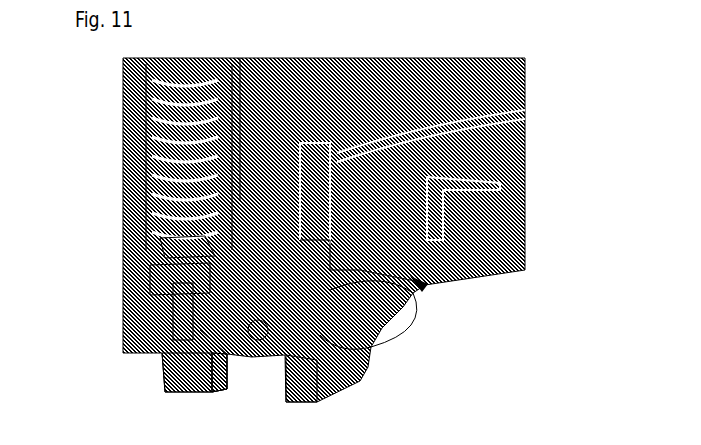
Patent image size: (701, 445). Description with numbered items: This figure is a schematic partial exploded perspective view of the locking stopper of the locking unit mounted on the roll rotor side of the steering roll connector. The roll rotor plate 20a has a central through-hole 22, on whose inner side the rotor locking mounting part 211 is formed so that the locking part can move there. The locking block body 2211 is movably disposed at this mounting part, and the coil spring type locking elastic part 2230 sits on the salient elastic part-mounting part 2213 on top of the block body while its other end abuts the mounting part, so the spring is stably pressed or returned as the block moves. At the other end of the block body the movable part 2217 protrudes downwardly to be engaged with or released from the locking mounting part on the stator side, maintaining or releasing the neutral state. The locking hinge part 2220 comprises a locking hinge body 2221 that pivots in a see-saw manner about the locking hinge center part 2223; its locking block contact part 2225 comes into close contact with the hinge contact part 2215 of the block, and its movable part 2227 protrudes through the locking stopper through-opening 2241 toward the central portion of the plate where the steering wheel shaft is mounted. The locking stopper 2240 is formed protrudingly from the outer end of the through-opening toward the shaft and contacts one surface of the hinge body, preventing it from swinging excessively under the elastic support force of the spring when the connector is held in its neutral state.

The through-hole 22 is at (508, 272).
The roll rotor plate 20a is at (510, 178).
The rotor locking mounting part 211 is at (155, 107).
The locking elastic part 2230 is at (160, 182).
The elastic part-mounting part 2213 is at (160, 241).
The locking block body 2211 is at (160, 270).
The hinge contact part 2215 is at (163, 309).
The movable part 2217 is at (170, 373).
The locking hinge part 2220 is at (347, 410).
The locking block contact part 2225 is at (198, 335).
The locking hinge center part 2223 is at (250, 343).
The locking hinge body 2221 is at (283, 342).
The movable part 2227 is at (352, 328).
The locking stopper through-opening 2241 is at (427, 287).
The locking stopper 2240 is at (431, 292).